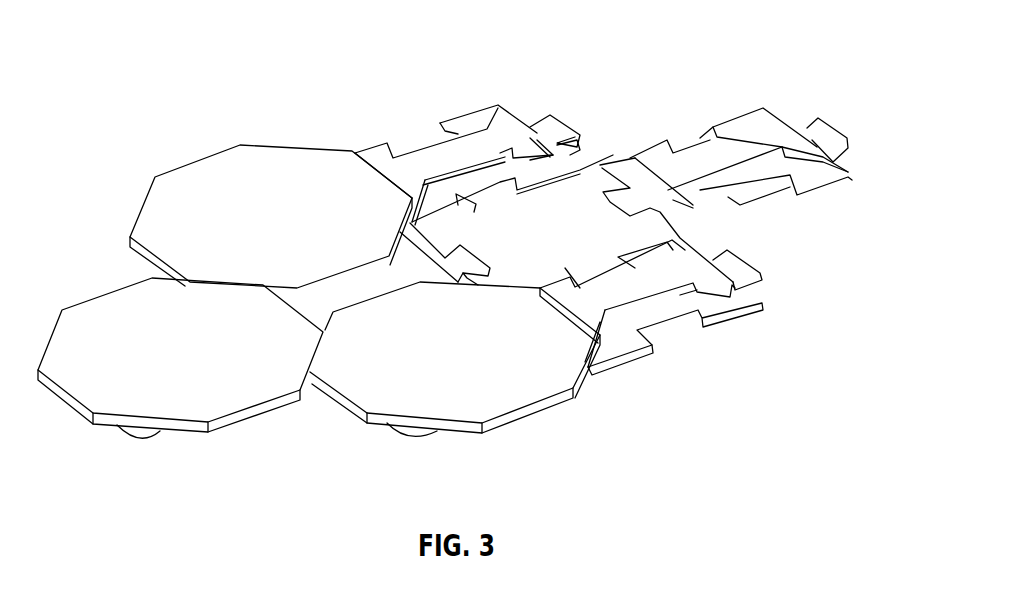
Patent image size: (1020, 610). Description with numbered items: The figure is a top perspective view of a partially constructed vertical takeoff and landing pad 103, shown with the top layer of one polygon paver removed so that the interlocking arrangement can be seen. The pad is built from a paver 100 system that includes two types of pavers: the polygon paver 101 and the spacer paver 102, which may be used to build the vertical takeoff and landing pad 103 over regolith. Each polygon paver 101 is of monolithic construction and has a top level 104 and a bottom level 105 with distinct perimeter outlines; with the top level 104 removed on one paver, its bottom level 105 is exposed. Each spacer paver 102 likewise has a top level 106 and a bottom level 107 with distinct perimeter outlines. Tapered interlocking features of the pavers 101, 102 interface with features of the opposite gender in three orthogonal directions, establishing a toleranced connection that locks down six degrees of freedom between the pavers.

The paver system 100 is at (798, 50).
The polygon paver 101 is at (382, 452).
The spacer paver 102 is at (747, 193).
The vertical takeoff and landing pad 103 is at (451, 61).
The top level 104 is at (207, 397).
The bottom level 105 is at (588, 187).
The top level 106 is at (810, 138).
The bottom level 107 is at (833, 167).